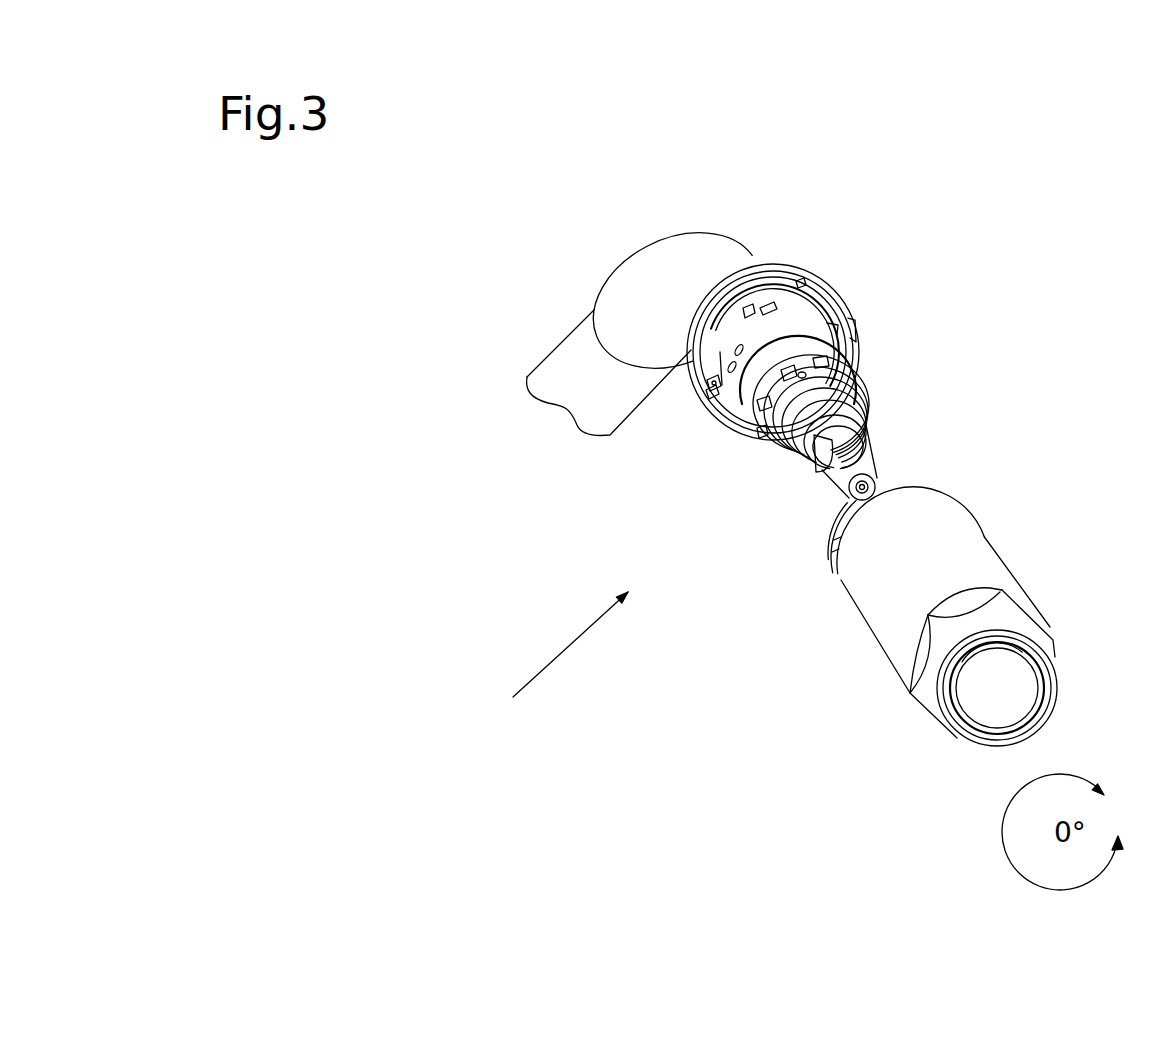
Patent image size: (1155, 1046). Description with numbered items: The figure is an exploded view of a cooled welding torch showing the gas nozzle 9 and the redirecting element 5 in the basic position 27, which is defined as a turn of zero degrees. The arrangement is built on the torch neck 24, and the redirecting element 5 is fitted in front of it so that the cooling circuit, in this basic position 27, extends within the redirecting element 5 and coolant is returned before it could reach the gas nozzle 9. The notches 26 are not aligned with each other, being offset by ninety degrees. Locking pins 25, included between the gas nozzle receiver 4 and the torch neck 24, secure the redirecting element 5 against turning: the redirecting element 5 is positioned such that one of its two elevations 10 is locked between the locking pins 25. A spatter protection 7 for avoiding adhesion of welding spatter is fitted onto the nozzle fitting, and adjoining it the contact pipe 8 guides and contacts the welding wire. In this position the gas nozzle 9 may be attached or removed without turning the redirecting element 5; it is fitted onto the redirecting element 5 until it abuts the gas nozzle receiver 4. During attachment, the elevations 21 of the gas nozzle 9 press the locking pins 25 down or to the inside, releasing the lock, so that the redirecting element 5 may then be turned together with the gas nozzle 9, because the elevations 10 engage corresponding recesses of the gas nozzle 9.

The gas nozzle receiver 4 is at (769, 273).
The redirecting element 5 is at (773, 318).
The spatter protection 7 is at (775, 412).
The contact pipe 8 is at (852, 452).
The gas nozzle 9 is at (935, 572).
The elevations 10 is at (713, 393).
The elevations 21 is at (838, 534).
The torch neck 24 is at (565, 353).
The locking pins 25 is at (707, 393).
The notches 26 is at (807, 277).
The basic position 27 is at (555, 660).